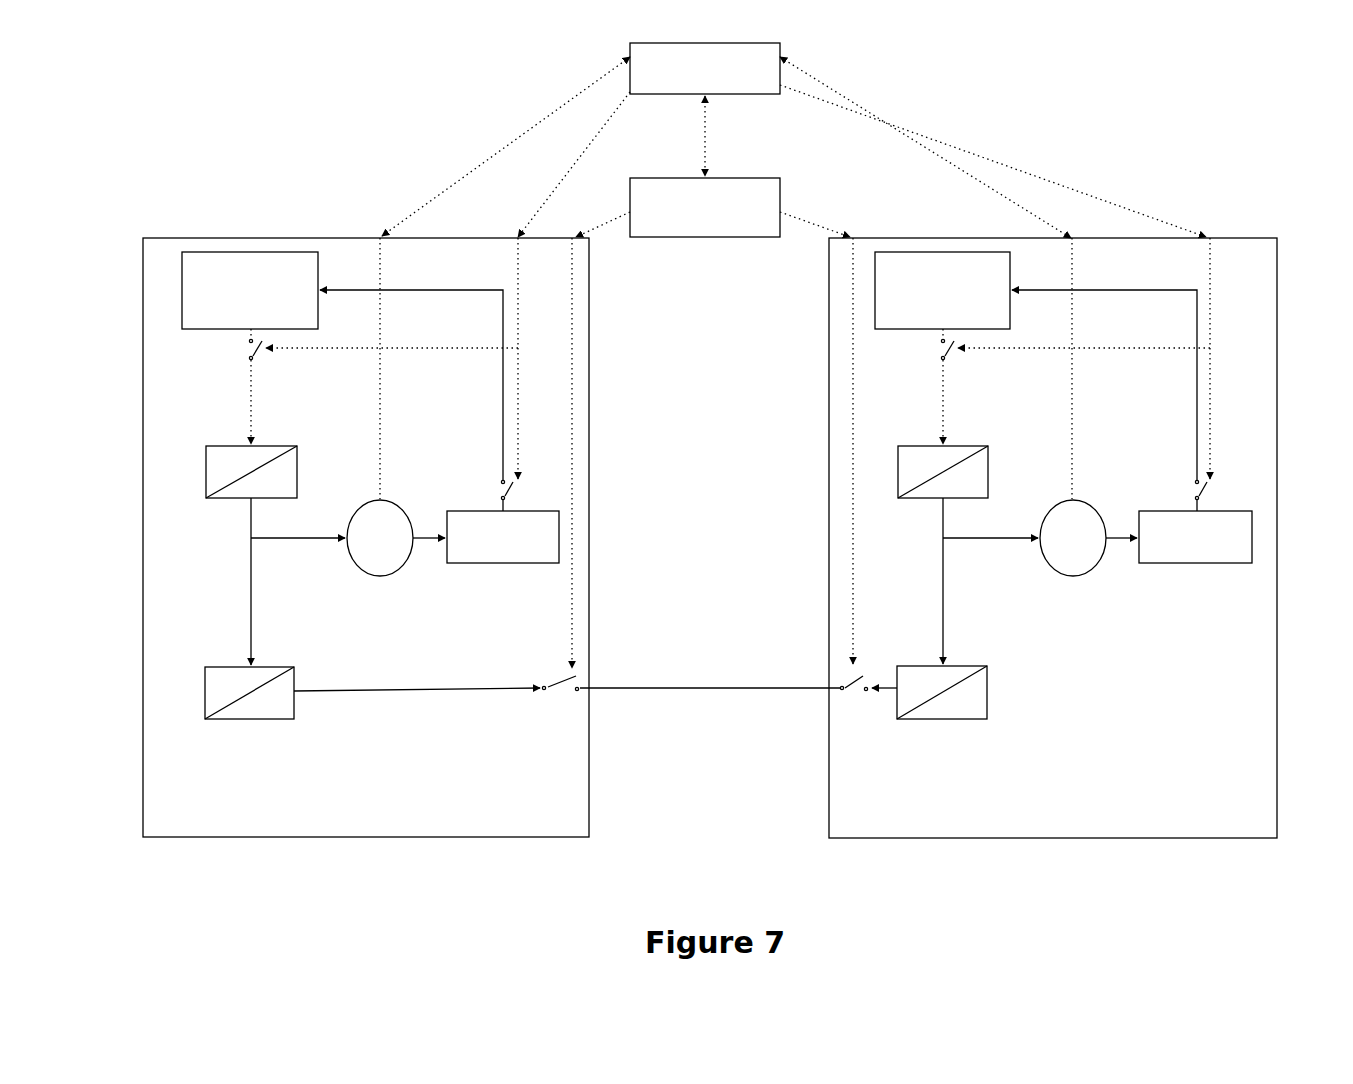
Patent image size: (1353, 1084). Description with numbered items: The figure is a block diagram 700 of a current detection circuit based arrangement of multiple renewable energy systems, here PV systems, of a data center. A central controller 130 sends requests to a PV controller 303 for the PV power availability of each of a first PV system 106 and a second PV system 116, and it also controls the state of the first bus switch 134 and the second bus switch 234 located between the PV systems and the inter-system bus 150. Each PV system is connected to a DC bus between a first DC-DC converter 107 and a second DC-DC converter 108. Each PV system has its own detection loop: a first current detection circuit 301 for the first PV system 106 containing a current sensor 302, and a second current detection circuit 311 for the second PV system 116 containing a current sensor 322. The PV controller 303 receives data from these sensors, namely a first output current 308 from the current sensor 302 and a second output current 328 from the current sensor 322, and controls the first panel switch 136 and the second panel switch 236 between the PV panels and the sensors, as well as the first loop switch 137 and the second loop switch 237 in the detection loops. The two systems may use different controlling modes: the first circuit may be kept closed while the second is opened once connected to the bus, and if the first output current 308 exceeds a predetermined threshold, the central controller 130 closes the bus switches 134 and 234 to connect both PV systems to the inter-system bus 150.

The block diagram 700 is at (665, 270).
The PV controller 303 is at (705, 68).
The central controller 130 is at (705, 207).
The first current detection circuit 301 is at (594, 412).
The second current detection circuit 311 is at (812, 414).
The first PV system 106 is at (250, 290).
The second PV system 116 is at (942, 290).
The switch S1_6 136 is at (247, 362).
The switch S2_6 236 is at (939, 362).
The first DC-DC converter 107 is at (207, 478).
The second DC-DC converter 108 is at (207, 693).
The first output current 308 is at (288, 541).
The second output current 328 is at (980, 541).
The current sensor 302 is at (396, 574).
The current sensor 322 is at (1090, 574).
The switch S1_7 137 is at (499, 489).
The switch S2_7 237 is at (1206, 488).
The switch S1_4 134 is at (567, 700).
The switch S2_4 234 is at (855, 698).
The inter-system bus 150 is at (688, 688).